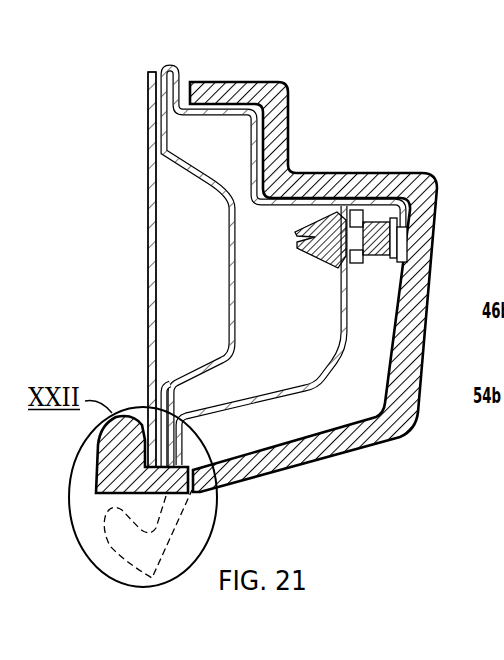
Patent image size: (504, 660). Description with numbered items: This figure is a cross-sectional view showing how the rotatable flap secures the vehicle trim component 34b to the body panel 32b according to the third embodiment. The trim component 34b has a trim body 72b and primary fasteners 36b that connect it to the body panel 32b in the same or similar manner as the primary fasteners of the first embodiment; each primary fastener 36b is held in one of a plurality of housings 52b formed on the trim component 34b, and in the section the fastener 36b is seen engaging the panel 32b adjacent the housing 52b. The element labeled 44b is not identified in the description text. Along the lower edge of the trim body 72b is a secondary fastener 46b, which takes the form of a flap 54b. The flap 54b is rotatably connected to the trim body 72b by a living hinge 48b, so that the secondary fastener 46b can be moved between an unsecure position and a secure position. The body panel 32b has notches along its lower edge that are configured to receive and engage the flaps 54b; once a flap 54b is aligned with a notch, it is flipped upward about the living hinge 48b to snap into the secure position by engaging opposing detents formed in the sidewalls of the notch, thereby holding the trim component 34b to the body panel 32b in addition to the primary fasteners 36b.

The body panel 32b is at (143, 100).
The vehicle trim component 34b is at (335, 268).
The primary fastener 36b is at (317, 262).
The fastener 44b is at (331, 267).
The secondary fastener 46b is at (105, 425).
The living hinge 48b is at (242, 475).
The housing 52b is at (377, 174).
The flap 54b is at (168, 478).
The trim body 72b is at (440, 230).